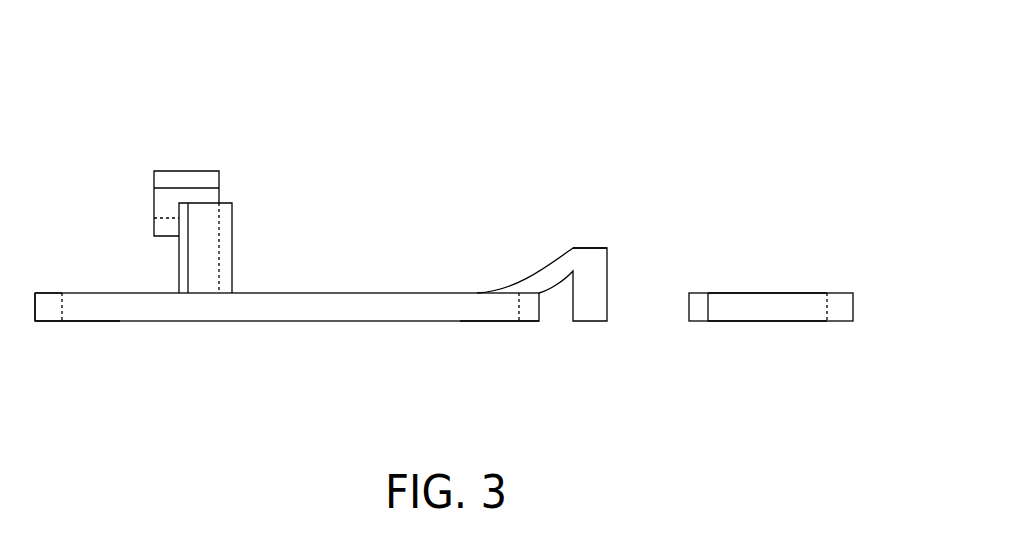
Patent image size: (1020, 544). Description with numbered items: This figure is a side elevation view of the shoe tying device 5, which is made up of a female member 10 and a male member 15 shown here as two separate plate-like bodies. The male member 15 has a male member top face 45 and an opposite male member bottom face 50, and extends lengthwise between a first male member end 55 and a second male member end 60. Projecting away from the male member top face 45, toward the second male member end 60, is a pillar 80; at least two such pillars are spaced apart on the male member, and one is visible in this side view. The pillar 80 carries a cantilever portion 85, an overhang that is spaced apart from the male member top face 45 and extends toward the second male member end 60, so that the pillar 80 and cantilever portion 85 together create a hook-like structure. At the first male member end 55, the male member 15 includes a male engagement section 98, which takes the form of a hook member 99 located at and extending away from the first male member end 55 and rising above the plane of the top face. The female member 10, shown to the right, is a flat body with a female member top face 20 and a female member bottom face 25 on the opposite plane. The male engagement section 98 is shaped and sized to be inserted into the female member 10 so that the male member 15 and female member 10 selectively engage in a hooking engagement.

The shoe tying device 5 is at (745, 63).
The female member 10 is at (839, 321).
The male member 15 is at (441, 291).
The female member top face 20 is at (767, 293).
The female member bottom face 25 is at (743, 321).
The male member top face 45 is at (72, 293).
The male member bottom face 50 is at (87, 321).
The first male member end 55 is at (488, 321).
The second male member end 60 is at (49, 321).
The pillar 80 is at (237, 209).
The cantilever portion 85 is at (189, 171).
The male engagement section 98 is at (580, 225).
The hook member 99 is at (605, 270).